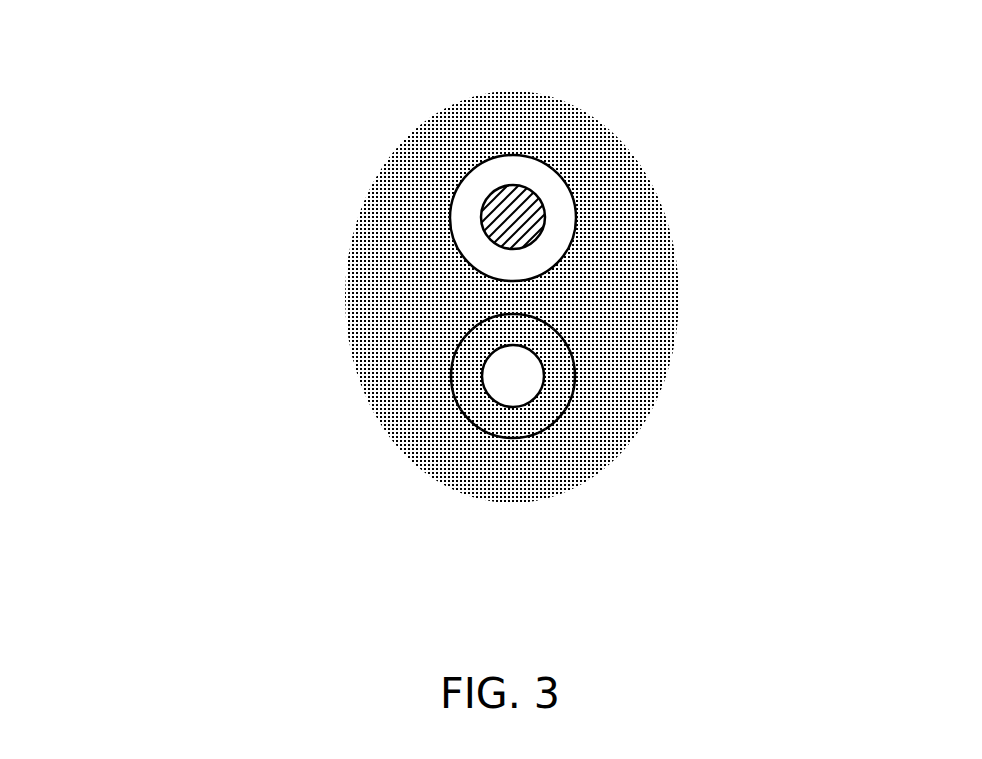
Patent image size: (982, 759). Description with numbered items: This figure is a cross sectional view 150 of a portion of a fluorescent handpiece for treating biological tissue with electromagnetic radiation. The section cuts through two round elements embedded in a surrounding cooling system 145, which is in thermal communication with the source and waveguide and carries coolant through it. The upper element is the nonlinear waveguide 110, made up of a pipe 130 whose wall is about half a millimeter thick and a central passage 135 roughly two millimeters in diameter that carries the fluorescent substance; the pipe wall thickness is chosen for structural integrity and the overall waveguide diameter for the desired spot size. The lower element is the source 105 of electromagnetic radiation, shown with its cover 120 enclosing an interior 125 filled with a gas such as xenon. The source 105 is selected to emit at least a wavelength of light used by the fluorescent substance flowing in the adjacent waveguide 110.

The cross sectional view 150 is at (200, 250).
The cooling system 145 is at (680, 313).
The pipe 130 is at (512, 170).
The nonlinear waveguide 110 is at (577, 218).
The passage 135 is at (513, 217).
The cover 120 is at (512, 422).
The source of electromagnetic radiation 105 is at (450, 376).
The interior of the source 125 is at (513, 376).